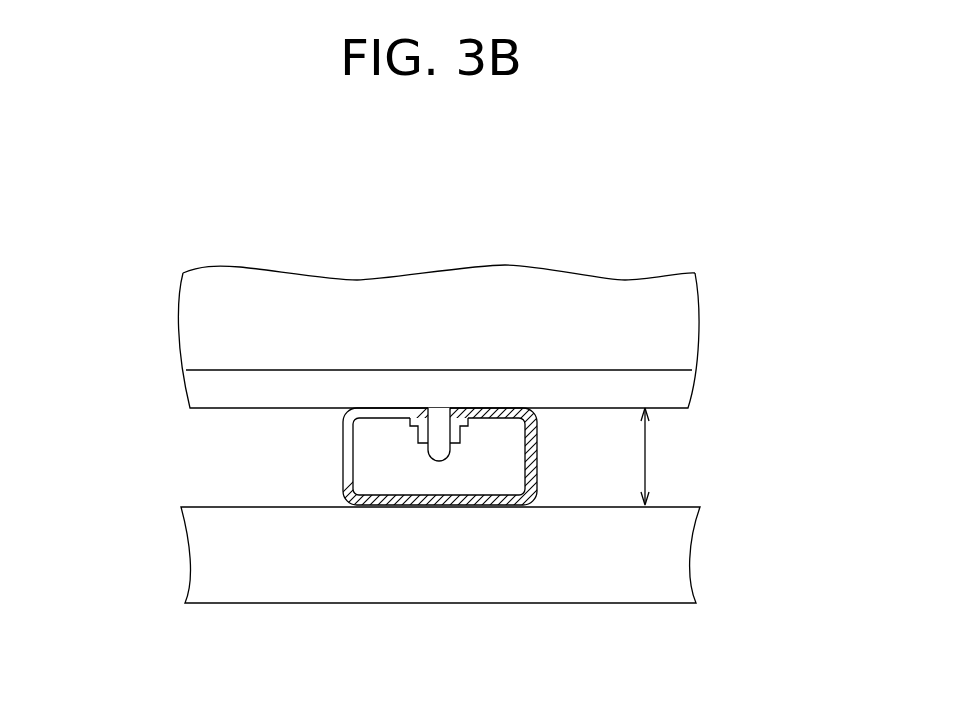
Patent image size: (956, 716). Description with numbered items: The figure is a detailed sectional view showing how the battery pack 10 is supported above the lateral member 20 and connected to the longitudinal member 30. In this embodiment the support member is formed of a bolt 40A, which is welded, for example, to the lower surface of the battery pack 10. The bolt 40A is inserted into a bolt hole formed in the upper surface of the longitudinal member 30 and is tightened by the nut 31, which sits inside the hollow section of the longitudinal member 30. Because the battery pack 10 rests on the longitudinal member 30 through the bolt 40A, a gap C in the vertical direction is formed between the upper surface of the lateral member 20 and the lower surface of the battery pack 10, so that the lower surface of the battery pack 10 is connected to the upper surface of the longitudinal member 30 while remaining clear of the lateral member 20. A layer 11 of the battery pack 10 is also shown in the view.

The battery pack 10 is at (357, 281).
The layer of first member 11 is at (523, 322).
The lateral member 20 is at (245, 570).
The longitudinal member 30 is at (420, 500).
The nut 31 is at (413, 435).
The bolt 40A is at (437, 452).
The gap C is at (659, 456).